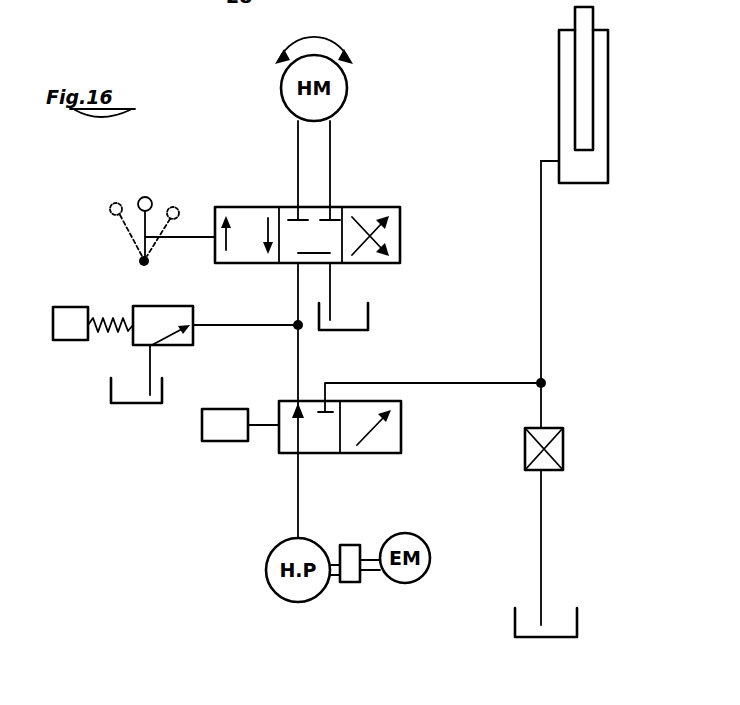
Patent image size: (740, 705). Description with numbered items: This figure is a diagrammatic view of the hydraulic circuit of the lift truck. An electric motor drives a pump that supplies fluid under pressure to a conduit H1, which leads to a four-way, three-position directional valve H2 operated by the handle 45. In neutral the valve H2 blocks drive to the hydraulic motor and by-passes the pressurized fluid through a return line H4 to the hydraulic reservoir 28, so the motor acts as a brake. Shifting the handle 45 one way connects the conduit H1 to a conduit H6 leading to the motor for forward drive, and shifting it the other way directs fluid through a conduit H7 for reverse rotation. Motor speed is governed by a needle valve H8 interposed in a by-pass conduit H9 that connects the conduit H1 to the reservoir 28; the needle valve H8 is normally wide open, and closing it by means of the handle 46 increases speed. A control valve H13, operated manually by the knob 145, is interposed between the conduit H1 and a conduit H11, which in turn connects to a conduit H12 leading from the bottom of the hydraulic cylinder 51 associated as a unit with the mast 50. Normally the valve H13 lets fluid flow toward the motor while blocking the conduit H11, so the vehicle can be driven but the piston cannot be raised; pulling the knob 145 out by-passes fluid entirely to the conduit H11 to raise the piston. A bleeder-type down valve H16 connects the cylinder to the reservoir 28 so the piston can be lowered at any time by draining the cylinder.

The handle 45 is at (140, 228).
The handle 46 is at (60, 307).
The mast 50 is at (593, 165).
The hydraulic cylinder 51 is at (572, 17).
The knob 145 is at (212, 442).
The hydraulic reservoir 28 is at (112, 403).
The conduit H1 is at (297, 288).
The directional valve H2 is at (352, 210).
The return line H4 is at (332, 305).
The conduit H6 is at (297, 141).
The conduit H7 is at (331, 144).
The needle valve H8 is at (153, 312).
The by-pass conduit H9 is at (213, 327).
The conduit H11 is at (440, 382).
The conduit H12 is at (542, 295).
The control valve H13 is at (405, 432).
The down valve H16 is at (563, 448).